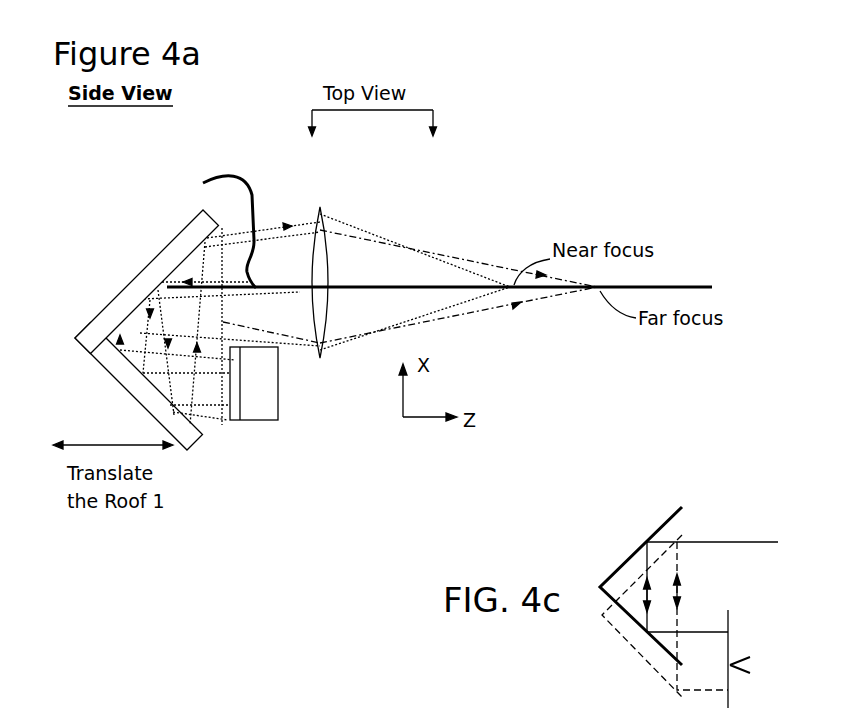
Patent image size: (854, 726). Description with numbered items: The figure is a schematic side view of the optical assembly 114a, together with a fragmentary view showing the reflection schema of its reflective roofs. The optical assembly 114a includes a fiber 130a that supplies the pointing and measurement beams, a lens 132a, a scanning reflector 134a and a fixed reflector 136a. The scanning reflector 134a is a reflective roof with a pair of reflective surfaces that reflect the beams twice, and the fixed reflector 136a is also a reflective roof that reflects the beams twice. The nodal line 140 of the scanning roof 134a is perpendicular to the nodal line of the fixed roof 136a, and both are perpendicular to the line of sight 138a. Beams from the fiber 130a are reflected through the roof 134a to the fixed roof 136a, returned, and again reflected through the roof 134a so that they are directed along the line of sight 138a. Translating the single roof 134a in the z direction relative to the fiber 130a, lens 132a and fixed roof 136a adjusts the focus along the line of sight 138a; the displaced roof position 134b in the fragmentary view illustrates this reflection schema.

In FIG. 4A, the optical assembly 114a is at (516, 204).
In FIG. 4A, the fiber 130a is at (164, 216).
In FIG. 4A, the lens 132a is at (320, 208).
In FIG. 4A, the scanning reflector 134a is at (188, 226).
In FIG. 4C, the scanning reflector 134a is at (657, 528).
In FIG. 4C, the roof mirror second surface position 134b is at (730, 638).
In FIG. 4A, the fixed reflector 136a is at (279, 404).
In FIG. 4A, the line of sight 138a is at (688, 285).
In FIG. 4A, the nodal line 140 is at (107, 371).